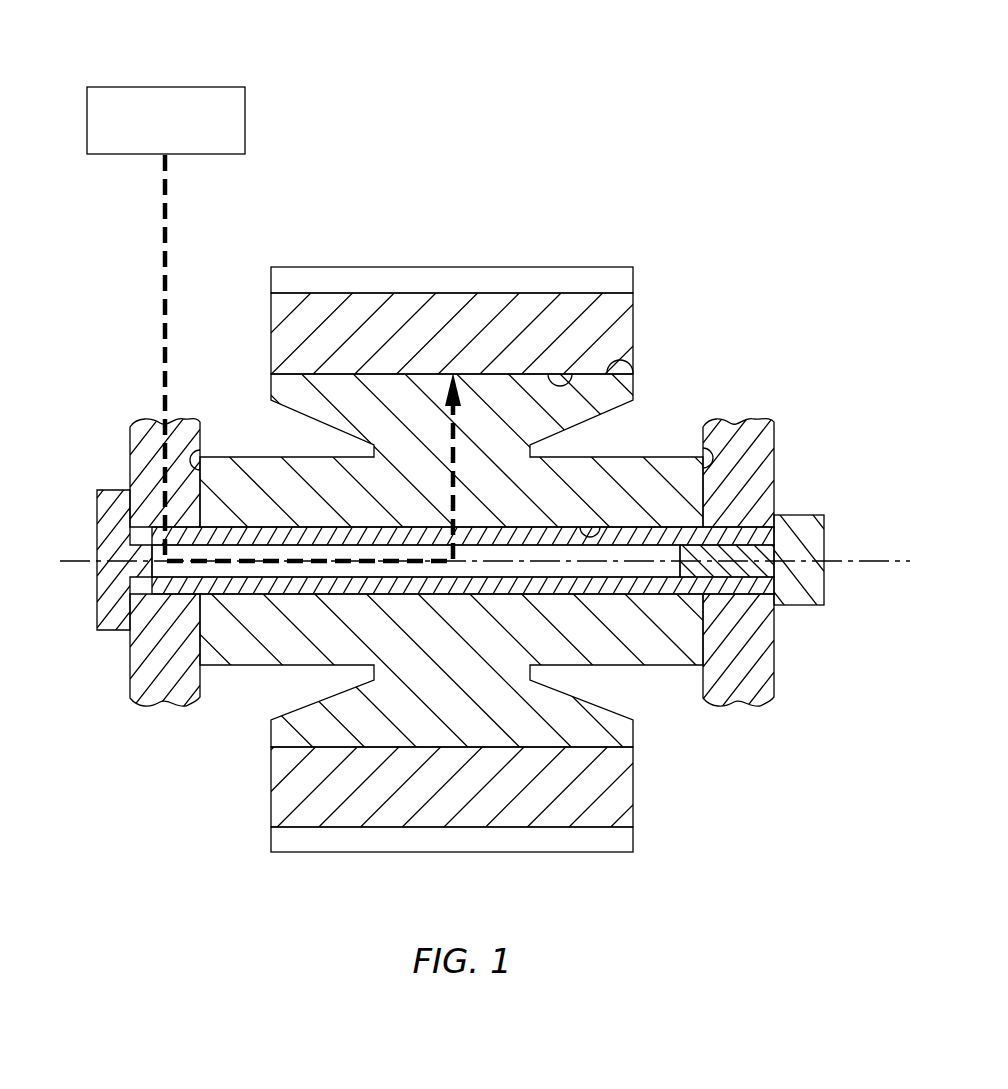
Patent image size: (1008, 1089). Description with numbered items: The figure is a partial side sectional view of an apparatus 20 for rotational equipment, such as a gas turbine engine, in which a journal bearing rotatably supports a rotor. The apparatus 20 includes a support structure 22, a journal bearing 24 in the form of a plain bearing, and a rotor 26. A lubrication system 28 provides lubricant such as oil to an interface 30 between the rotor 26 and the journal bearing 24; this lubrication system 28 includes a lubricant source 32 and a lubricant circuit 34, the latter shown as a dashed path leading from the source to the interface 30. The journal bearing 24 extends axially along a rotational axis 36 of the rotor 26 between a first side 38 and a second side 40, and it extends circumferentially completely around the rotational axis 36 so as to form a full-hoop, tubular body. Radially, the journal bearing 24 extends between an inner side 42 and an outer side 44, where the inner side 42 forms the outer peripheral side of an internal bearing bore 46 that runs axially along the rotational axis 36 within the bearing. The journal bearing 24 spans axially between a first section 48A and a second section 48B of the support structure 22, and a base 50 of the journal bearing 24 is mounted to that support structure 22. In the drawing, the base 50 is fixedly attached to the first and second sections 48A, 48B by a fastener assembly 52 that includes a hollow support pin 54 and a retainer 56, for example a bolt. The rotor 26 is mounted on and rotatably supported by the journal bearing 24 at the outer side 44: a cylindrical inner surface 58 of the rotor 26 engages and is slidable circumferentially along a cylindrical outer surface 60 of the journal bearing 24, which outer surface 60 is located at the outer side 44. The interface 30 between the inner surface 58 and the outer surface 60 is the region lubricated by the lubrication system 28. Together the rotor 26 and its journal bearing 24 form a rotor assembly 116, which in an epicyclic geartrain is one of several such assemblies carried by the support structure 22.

The apparatus for rotational equipment 20 is at (457, 432).
The support structure 22 is at (458, 525).
The journal bearing 24 is at (429, 417).
The rotor 26 is at (638, 318).
The lubrication system 28 is at (263, 287).
The interface 30 is at (264, 377).
The lubricant source 32 is at (205, 87).
The lubricant circuit 34 is at (158, 360).
The rotational axis 36 is at (908, 566).
The first side 38 is at (200, 452).
The second side 40 is at (703, 452).
The inner side 42 is at (580, 527).
The outer side 44 is at (674, 345).
The bearing bore 46 is at (475, 551).
The first section 48A is at (128, 688).
The second section 48B is at (771, 706).
The base 50 is at (240, 668).
The fastener assembly 52 is at (838, 565).
The hollow support pin 54 is at (97, 586).
The retainer 56 is at (825, 539).
The cylindrical inner surface 58 is at (560, 374).
The cylindrical outer surface 60 is at (608, 363).
The rotor assembly 116 is at (429, 507).